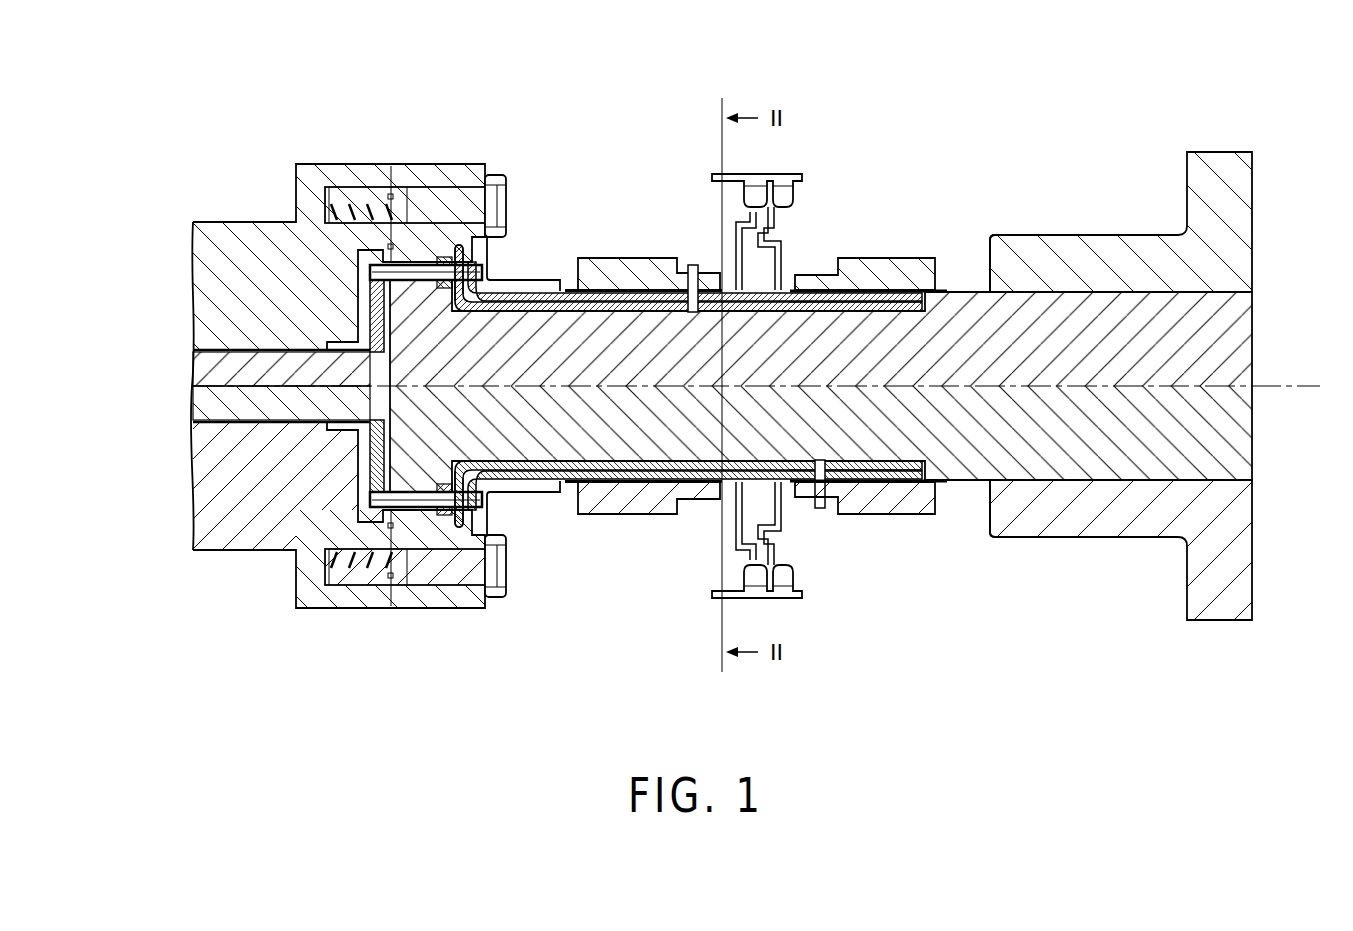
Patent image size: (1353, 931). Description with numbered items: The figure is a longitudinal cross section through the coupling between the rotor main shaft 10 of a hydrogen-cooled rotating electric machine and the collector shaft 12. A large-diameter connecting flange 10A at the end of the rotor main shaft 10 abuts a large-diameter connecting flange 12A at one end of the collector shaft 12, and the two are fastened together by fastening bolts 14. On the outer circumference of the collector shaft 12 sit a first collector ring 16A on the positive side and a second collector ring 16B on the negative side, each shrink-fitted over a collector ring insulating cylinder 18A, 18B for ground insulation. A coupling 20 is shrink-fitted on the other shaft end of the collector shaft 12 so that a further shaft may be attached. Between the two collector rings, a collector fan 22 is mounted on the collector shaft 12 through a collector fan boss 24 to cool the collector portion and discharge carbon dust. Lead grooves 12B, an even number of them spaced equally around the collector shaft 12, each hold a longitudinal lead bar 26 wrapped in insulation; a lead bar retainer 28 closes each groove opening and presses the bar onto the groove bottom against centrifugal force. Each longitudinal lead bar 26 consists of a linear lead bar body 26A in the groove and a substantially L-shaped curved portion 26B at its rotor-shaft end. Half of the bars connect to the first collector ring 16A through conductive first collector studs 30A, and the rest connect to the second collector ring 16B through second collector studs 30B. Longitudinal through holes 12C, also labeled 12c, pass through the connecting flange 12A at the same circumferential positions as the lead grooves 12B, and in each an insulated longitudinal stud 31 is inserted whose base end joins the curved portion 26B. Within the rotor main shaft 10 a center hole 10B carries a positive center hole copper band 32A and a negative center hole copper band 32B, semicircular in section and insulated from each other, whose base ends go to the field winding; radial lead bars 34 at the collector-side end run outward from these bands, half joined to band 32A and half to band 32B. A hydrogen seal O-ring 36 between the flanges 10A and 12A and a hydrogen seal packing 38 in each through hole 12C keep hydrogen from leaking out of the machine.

The rotor main shaft 10 is at (204, 214).
The connecting flange 10A is at (313, 164).
The center hole 10B is at (243, 417).
The collector shaft 12 is at (1052, 300).
The connecting flange 12A is at (432, 262).
The lead grooves 12B is at (878, 296).
The longitudinal through hole 12c is at (395, 262).
The longitudinal through holes 12C is at (400, 510).
The fastening bolts 14 is at (499, 175).
The first collector ring 16A is at (645, 258).
The second collector ring 16B is at (906, 258).
The collector ring insulating cylinder 18A is at (612, 289).
The collector ring insulating cylinder 18B is at (945, 289).
The coupling 20 is at (1212, 152).
The collector fan 22 is at (796, 160).
The collector fan boss 24 is at (778, 236).
The longitudinal lead bar 26 is at (528, 304).
The lead bar body 26A is at (812, 300).
The curved portion 26B is at (463, 250).
The lead bar retainer 28 is at (572, 295).
The first collector studs 30A is at (693, 265).
The second collector studs 30B is at (820, 508).
The longitudinal stud 31 is at (422, 270).
The center hole copper band 32A is at (199, 366).
The center hole copper band 32B is at (199, 407).
The radial lead bars 34 is at (370, 300).
The hydrogen seal O-ring 36 is at (404, 258).
The hydrogen seal packing 38 is at (445, 257).